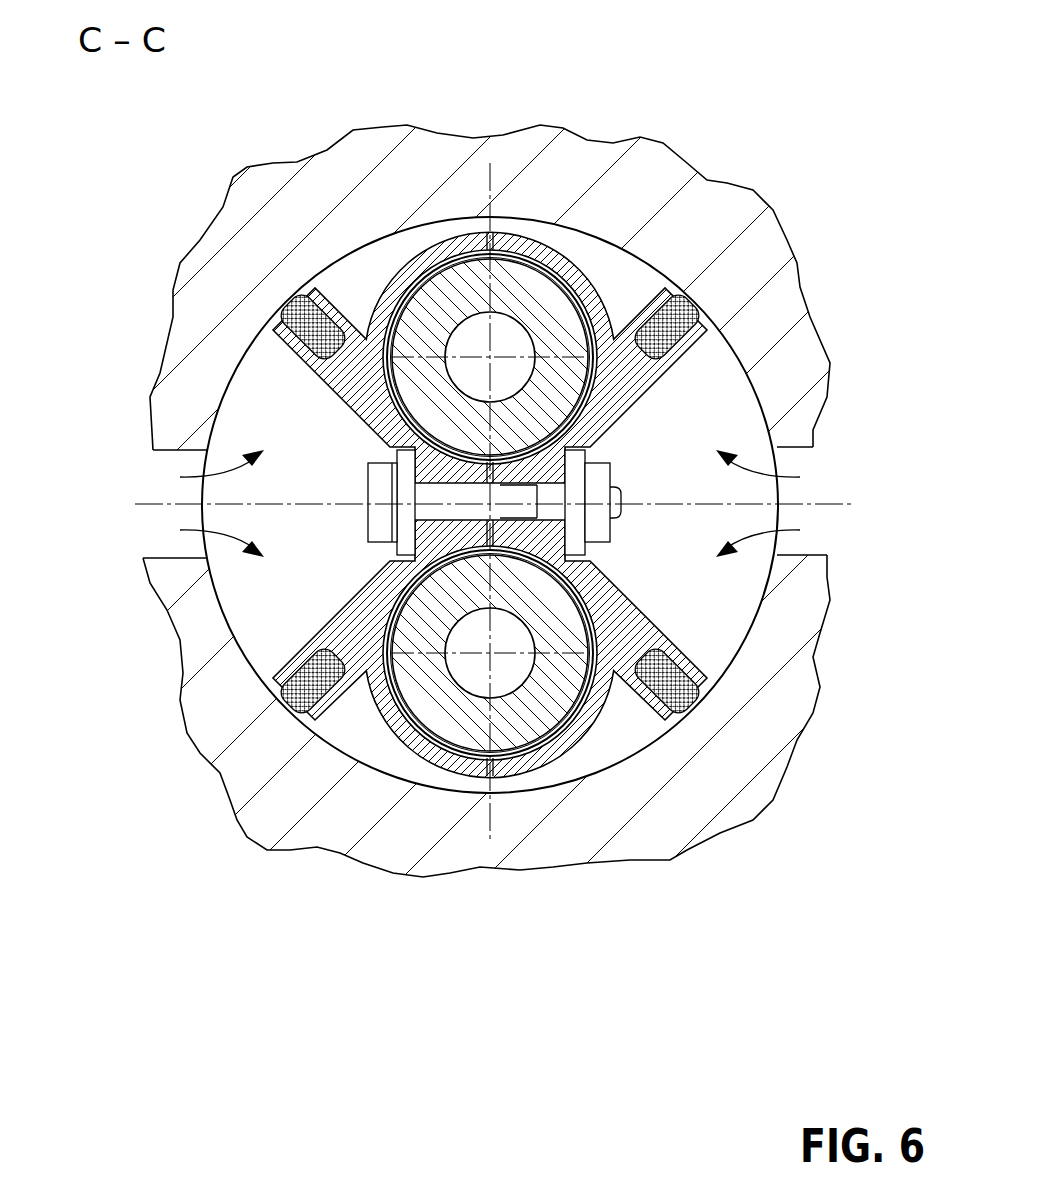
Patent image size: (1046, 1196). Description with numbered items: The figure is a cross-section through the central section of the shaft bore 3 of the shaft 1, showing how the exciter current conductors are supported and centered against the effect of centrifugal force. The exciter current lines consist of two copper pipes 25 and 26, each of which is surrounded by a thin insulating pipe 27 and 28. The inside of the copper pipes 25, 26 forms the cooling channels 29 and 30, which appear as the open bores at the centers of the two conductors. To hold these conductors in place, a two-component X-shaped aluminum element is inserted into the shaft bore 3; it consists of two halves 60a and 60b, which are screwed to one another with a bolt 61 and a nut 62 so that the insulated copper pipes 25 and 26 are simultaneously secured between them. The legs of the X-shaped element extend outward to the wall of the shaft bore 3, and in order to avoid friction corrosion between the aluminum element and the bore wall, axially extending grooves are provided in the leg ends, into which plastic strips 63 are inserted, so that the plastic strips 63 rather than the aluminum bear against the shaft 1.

The shaft 1 is at (240, 767).
The shaft bore 3 is at (262, 600).
The copper pipe 25 is at (552, 692).
The copper pipe 26 is at (552, 315).
The insulating pipe 27 is at (459, 740).
The insulating pipe 28 is at (442, 270).
The cooling channel 29 is at (508, 673).
The cooling channel 30 is at (503, 333).
The half of aluminum element 60a is at (388, 715).
The half of aluminum element 60b is at (618, 670).
The bolt 61 is at (380, 512).
The nut 62 is at (598, 512).
The plastic strip 63 is at (305, 327).